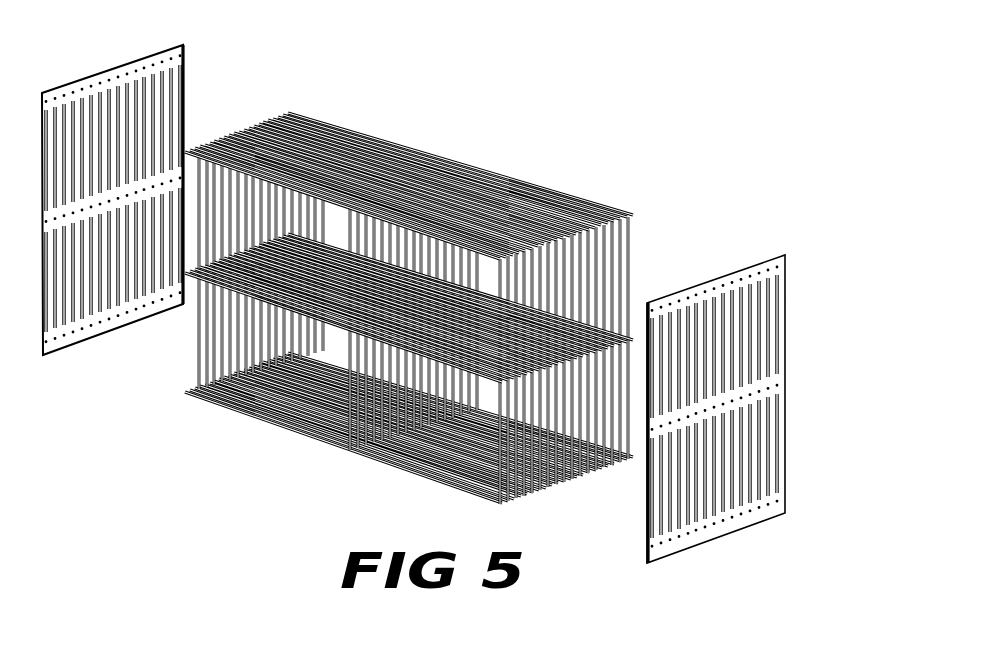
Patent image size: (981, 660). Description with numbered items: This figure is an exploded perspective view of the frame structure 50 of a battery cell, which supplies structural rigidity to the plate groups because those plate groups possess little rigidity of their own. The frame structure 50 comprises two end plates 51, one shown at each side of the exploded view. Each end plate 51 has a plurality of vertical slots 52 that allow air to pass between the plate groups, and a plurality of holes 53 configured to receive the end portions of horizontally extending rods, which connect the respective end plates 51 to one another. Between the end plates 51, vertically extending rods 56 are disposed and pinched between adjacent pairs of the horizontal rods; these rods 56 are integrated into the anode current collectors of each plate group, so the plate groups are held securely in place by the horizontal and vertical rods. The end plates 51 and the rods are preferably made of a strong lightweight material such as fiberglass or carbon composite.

The frame structure 50 is at (444, 292).
The end plate 51 is at (108, 332).
The vertical slots 52 is at (150, 103).
The holes 53 is at (143, 72).
The vertically extending rods 56 is at (323, 122).